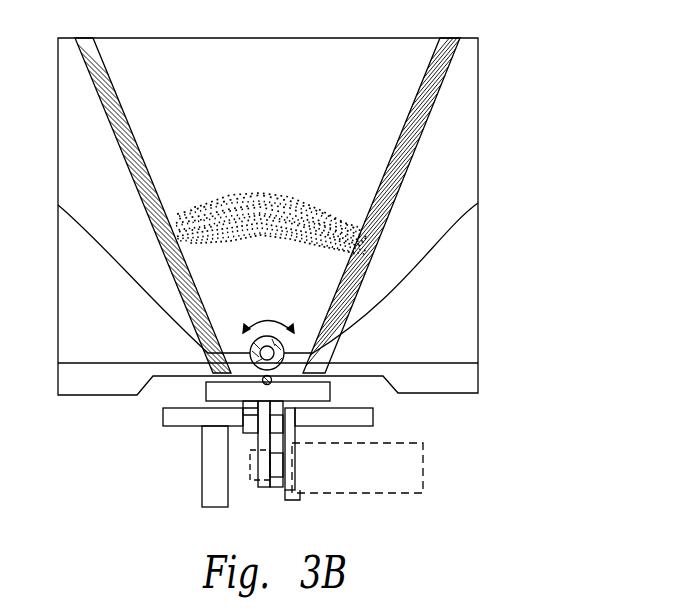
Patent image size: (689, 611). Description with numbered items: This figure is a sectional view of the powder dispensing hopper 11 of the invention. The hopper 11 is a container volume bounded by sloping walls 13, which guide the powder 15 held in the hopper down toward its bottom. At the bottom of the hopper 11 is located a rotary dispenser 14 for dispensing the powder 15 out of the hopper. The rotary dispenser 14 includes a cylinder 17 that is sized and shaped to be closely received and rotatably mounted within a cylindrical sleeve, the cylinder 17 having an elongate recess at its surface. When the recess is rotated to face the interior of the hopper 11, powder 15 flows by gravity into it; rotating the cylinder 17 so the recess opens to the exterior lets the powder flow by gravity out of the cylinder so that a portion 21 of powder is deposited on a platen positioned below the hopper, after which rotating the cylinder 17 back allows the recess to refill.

The hopper 11 is at (478, 125).
The sloping walls 13 is at (395, 175).
The rotary dispenser 14 is at (208, 350).
The powder 15 is at (330, 233).
The cylinder 17 is at (318, 352).
The portion of powder 21 is at (272, 386).